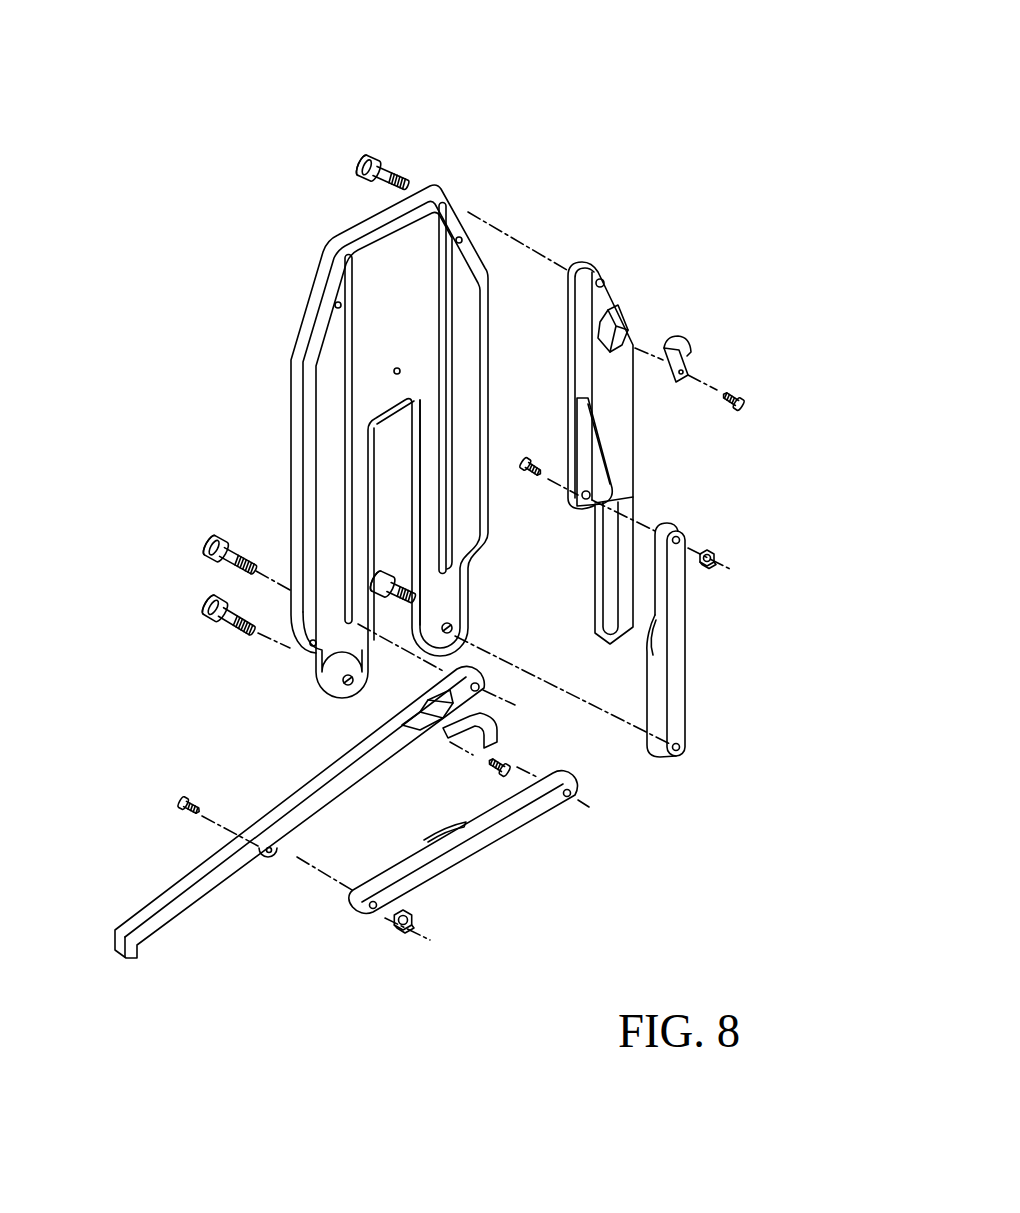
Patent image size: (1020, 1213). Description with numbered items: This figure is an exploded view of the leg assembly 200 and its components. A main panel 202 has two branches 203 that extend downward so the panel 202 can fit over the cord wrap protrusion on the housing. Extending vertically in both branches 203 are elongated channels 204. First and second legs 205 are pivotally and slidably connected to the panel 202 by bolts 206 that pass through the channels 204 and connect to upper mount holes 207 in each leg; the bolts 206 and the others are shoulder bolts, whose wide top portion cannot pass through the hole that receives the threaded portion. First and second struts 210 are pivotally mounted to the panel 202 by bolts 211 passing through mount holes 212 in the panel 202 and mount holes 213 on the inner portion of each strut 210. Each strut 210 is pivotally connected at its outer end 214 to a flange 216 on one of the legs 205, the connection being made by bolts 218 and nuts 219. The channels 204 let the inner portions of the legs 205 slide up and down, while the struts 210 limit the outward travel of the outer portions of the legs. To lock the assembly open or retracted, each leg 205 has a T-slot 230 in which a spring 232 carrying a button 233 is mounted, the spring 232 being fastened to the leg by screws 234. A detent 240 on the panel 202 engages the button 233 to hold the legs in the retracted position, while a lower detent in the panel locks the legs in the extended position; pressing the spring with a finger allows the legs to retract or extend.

The leg assembly 200 is at (665, 186).
The main panel 202 is at (304, 325).
The branches 203 is at (470, 400).
The elongated channels 204 is at (449, 291).
The legs 205 is at (614, 432).
The bolts 206 is at (359, 155).
The upper mount holes 207 is at (602, 282).
The struts 210 is at (690, 656).
The bolts 211 is at (383, 573).
The mount holes 212 is at (452, 630).
The mount holes 213 is at (690, 746).
The outer end 214 is at (688, 522).
The flange 216 is at (575, 470).
The bolts 218 is at (536, 480).
The nuts 219 is at (716, 560).
The T-slot 230 is at (612, 318).
The spring 232 is at (688, 355).
The button 233 is at (666, 344).
The screws 234 is at (738, 398).
The detent 240 is at (335, 303).